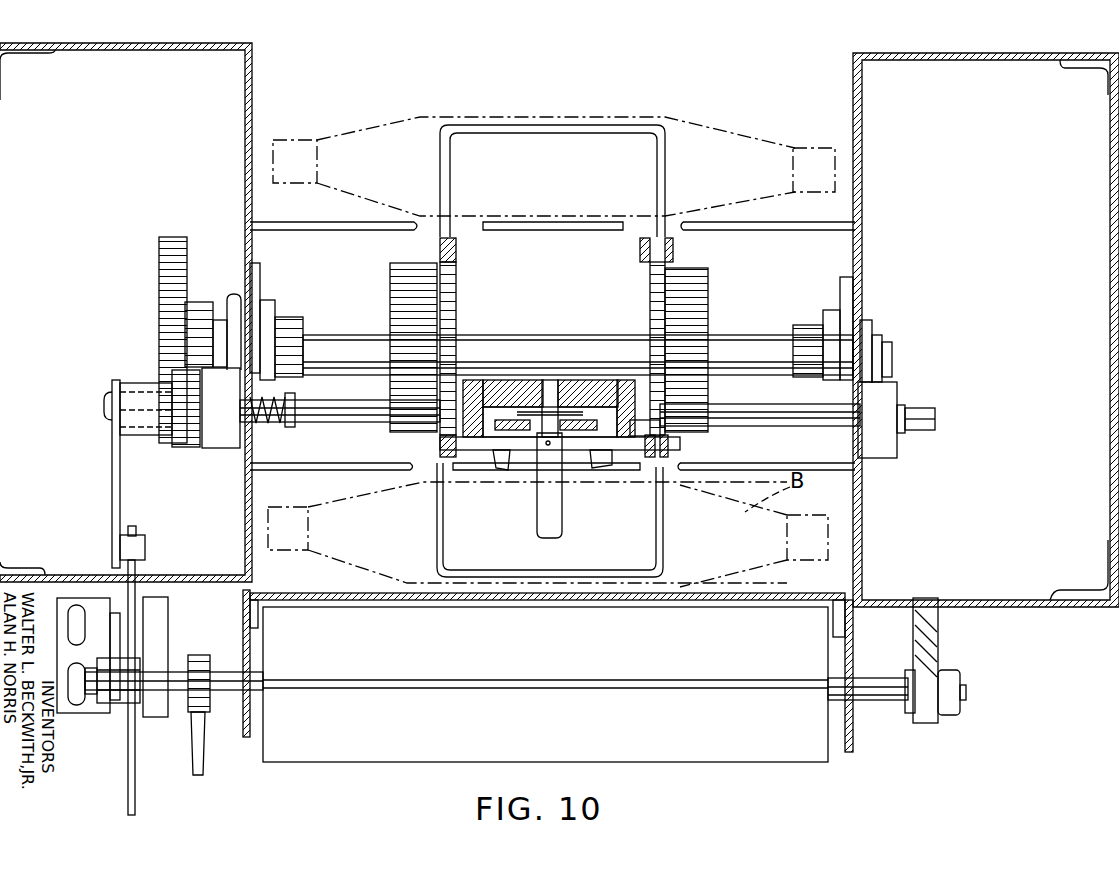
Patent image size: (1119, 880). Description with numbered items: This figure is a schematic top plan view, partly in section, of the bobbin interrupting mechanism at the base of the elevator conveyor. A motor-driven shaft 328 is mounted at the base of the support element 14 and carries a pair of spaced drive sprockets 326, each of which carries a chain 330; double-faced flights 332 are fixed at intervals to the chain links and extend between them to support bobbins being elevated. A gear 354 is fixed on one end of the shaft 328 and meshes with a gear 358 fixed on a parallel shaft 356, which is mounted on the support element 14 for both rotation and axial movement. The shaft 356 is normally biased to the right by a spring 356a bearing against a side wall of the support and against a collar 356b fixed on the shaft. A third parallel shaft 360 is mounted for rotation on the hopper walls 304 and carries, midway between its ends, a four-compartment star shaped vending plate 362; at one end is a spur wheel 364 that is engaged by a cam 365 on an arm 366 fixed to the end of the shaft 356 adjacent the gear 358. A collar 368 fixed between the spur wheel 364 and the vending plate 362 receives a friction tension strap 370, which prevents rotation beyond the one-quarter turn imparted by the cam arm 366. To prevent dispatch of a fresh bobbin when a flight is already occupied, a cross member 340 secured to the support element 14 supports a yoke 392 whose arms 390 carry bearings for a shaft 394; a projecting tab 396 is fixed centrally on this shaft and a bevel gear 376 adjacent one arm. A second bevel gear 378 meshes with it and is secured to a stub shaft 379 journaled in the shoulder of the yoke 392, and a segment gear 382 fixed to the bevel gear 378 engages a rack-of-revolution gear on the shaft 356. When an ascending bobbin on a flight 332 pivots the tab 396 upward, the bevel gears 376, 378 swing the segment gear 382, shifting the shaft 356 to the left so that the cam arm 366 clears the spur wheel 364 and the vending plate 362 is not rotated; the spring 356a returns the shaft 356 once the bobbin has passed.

The support element 14 is at (1025, 600).
The hopper wall 304 is at (852, 750).
The drive sprocket 326 is at (456, 292).
The shaft 328 is at (612, 300).
The chain 330 is at (683, 250).
The double-faced flight 332 is at (657, 555).
The cross member 340 is at (520, 378).
The gear 354 is at (165, 330).
The shaft 356 is at (318, 420).
The spring 356a is at (262, 425).
The collar 356b is at (290, 400).
The gear 358 is at (190, 447).
The shaft 360 is at (858, 698).
The star shaped vending plate 362 is at (690, 755).
The spur wheel 364 is at (134, 763).
The cam 365 is at (142, 548).
The arm 366 is at (113, 500).
The collar 368 is at (205, 705).
The tension strap 370 is at (222, 628).
The bevel gear 376 is at (497, 455).
The second bevel gear 378 is at (575, 420).
The stub shaft 379 is at (545, 390).
The segment gear 382 is at (528, 415).
The yoke arm 390 is at (640, 430).
The yoke 392 is at (571, 390).
The shaft 394 is at (597, 445).
The projecting tab 396 is at (562, 530).